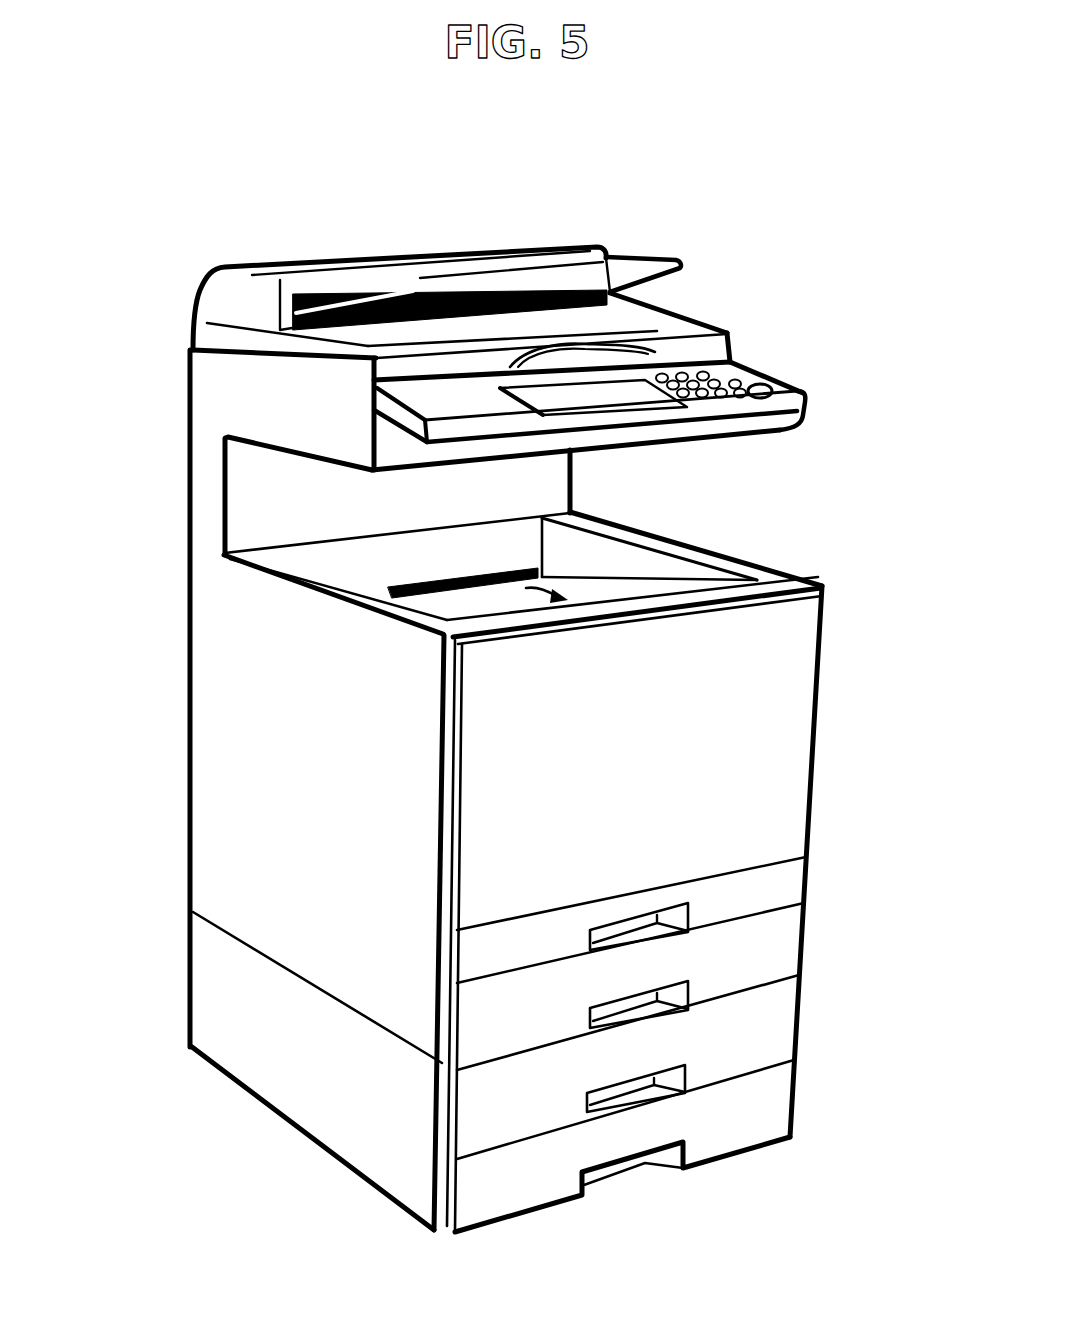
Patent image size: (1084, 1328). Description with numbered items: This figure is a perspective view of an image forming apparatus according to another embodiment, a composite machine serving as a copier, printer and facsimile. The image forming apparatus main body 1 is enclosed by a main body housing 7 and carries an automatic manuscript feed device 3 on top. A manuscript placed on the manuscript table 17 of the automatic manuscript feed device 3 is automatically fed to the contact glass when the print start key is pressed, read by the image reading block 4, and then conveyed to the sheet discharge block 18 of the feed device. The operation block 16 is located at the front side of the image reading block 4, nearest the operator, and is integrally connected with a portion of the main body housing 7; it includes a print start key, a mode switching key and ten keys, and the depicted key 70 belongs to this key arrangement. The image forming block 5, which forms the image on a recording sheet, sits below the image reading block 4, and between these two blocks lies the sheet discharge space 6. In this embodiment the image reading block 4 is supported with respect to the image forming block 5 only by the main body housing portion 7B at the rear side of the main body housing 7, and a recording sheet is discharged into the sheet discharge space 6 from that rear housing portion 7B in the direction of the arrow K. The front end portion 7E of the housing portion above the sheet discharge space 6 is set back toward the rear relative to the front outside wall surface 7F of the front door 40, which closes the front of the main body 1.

The image forming apparatus main body 1 is at (836, 784).
The automatic manuscript feed device 3 is at (305, 243).
The image reading block 4 is at (273, 405).
The image forming block 5 is at (303, 653).
The sheet discharge space 6 is at (445, 512).
The main body housing 7 is at (155, 614).
The main body housing portion at the rear side 7B is at (258, 490).
The front end portion 7E is at (752, 412).
The front outside wall surface 7F is at (782, 706).
The operation block 16 is at (732, 376).
The manuscript table 17 is at (660, 253).
The sheet discharge block 18 is at (613, 324).
The front door 40 is at (780, 834).
The start key 70 is at (790, 386).
The arrow K is at (526, 588).